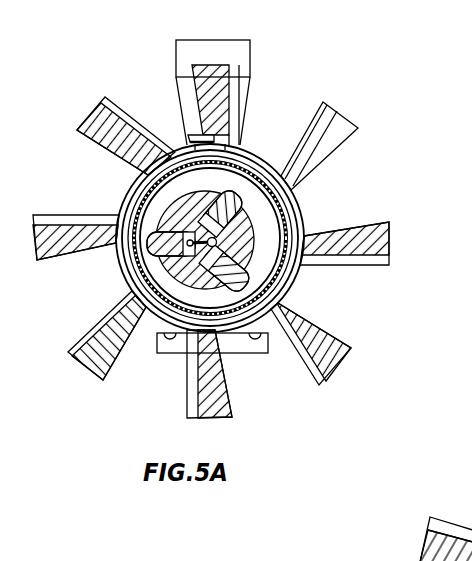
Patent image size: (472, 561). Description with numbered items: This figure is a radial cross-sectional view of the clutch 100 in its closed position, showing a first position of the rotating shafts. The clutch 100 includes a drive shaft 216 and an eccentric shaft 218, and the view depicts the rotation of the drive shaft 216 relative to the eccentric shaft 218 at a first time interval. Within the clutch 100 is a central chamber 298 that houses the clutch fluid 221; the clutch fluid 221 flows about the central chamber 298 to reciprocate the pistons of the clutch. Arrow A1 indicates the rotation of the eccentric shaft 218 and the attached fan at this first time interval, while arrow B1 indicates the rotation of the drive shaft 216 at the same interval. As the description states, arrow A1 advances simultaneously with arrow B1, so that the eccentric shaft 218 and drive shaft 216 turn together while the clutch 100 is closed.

The clutch 100 is at (86, 61).
The drive shaft 216 is at (150, 207).
The eccentric shaft 218 is at (268, 203).
The clutch fluid 221 is at (255, 214).
The central chamber 298 is at (160, 273).
The arrow A1 is at (270, 262).
The arrow B1 is at (292, 283).